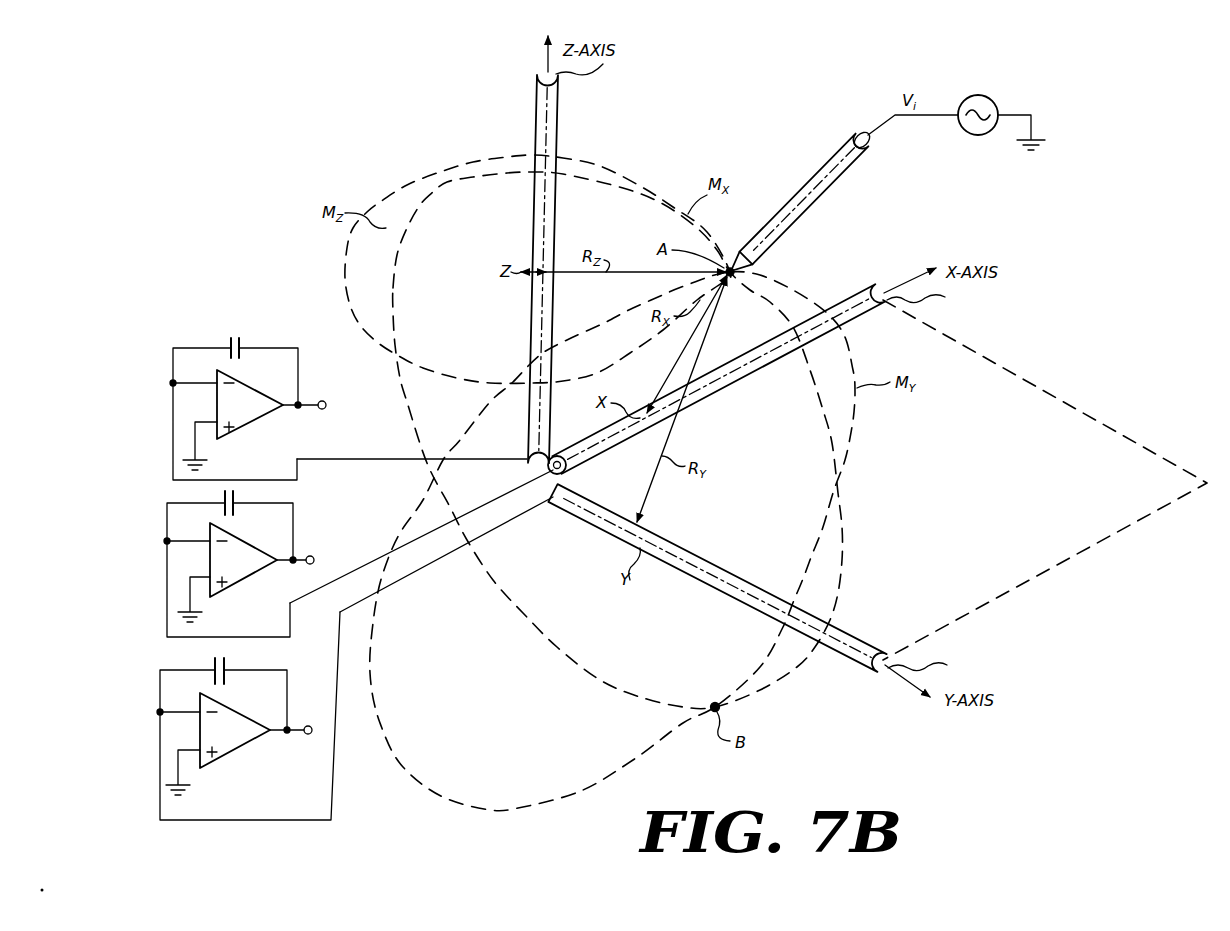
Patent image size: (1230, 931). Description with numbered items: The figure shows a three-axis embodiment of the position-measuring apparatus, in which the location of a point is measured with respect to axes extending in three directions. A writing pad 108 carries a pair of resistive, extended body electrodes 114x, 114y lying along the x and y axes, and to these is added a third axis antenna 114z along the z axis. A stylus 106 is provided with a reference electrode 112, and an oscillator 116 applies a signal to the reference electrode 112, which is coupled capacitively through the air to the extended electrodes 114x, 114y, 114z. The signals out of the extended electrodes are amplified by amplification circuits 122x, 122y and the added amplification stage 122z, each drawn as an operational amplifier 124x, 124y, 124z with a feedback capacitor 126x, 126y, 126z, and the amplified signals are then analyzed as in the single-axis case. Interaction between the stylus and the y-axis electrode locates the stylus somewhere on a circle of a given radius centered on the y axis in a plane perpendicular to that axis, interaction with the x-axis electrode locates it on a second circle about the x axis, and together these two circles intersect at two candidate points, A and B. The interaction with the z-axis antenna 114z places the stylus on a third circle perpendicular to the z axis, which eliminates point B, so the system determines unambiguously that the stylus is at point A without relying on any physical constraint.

The stylus 106 is at (852, 170).
The writing pad 108 is at (1075, 556).
The reference electrode 112 is at (752, 263).
The extended body electrode 114x is at (868, 290).
The extended body electrode 114y is at (870, 673).
The third axis antenna 114z is at (536, 86).
The oscillator 116 is at (992, 99).
The amplification circuit 122x is at (308, 553).
The amplification circuit 122y is at (310, 658).
The amplification stage 122z is at (301, 396).
The x-axis operational amplifier 124x is at (240, 578).
The y-axis operational amplifier 124y is at (228, 752).
The z-axis operational amplifier 124z is at (248, 408).
The x-axis feedback capacitor 126x is at (222, 497).
The y-axis feedback capacitor 126y is at (213, 668).
The z-axis feedback capacitor 126z is at (242, 342).